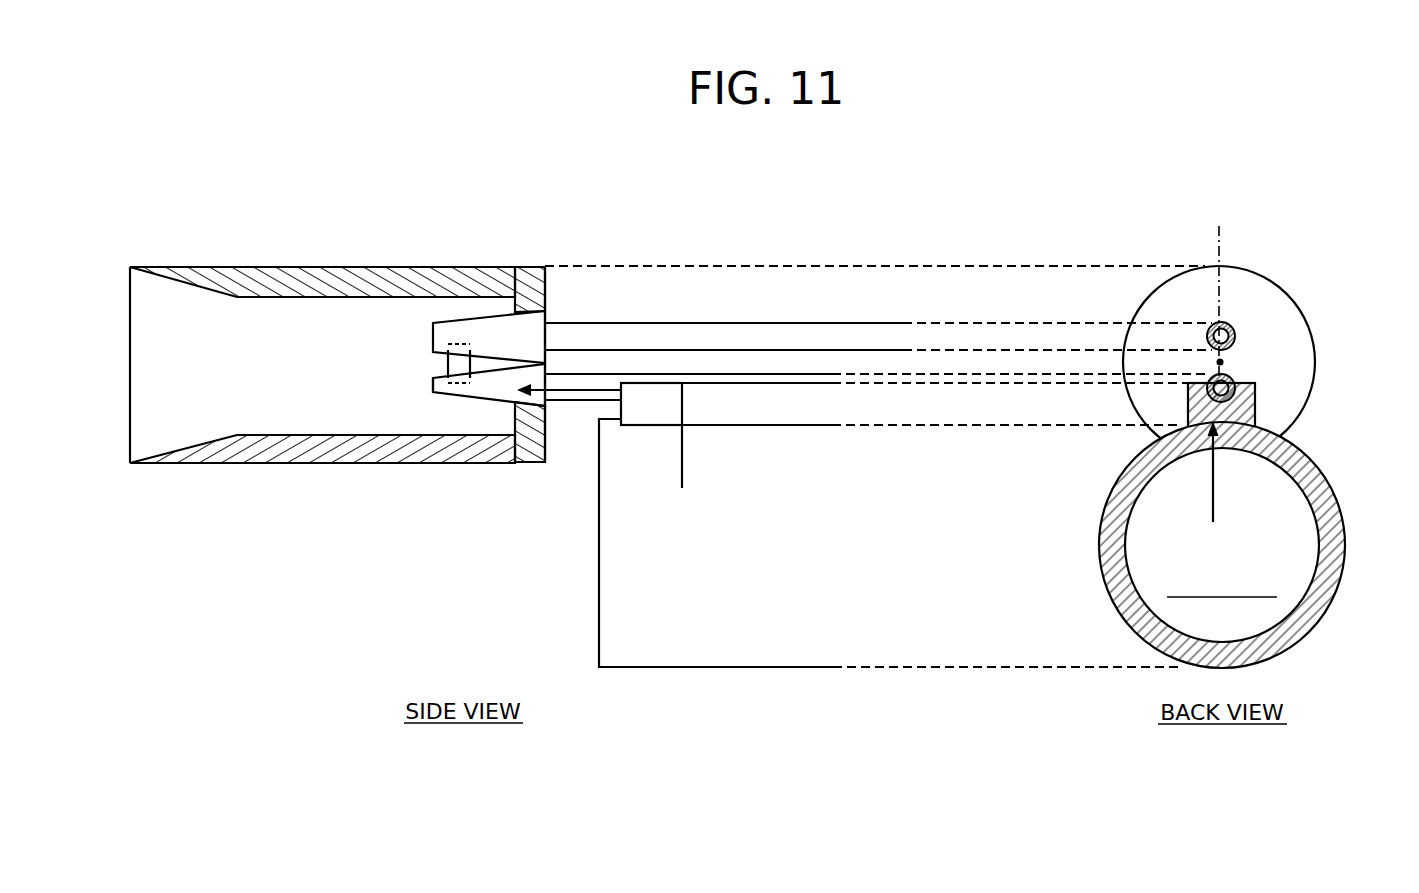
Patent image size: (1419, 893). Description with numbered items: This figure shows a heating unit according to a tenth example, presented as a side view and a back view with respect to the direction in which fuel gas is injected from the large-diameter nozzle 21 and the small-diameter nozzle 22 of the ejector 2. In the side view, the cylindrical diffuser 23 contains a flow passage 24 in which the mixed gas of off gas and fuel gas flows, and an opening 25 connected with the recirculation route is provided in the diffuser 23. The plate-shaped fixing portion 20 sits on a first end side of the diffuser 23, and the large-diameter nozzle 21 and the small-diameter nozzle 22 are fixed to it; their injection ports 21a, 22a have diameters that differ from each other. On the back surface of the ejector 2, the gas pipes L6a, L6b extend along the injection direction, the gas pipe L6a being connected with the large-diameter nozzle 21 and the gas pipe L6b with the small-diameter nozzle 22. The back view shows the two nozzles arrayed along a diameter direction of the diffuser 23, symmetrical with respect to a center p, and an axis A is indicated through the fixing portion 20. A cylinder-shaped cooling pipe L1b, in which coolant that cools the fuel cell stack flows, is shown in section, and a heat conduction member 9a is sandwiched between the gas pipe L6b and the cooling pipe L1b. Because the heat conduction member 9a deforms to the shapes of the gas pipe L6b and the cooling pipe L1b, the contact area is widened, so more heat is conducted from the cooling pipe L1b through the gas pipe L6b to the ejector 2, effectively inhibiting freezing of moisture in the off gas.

The ejector 2 is at (598, 253).
The fixing portion 20 is at (533, 268).
The large-diameter nozzle 21 is at (543, 323).
The injection port 21a is at (433, 323).
The small-diameter nozzle 22 is at (543, 364).
The injection port 22a is at (433, 393).
The diffuser 23 is at (363, 267).
The flow passage 24 is at (286, 376).
The opening 25 is at (468, 345).
The gas pipe L6a is at (733, 322).
The gas pipe L6b is at (730, 373).
The heat conduction member 9a is at (775, 392).
The cooling pipe L1b is at (599, 517).
The nozzle axis A is at (1219, 287).
The center p is at (1223, 362).